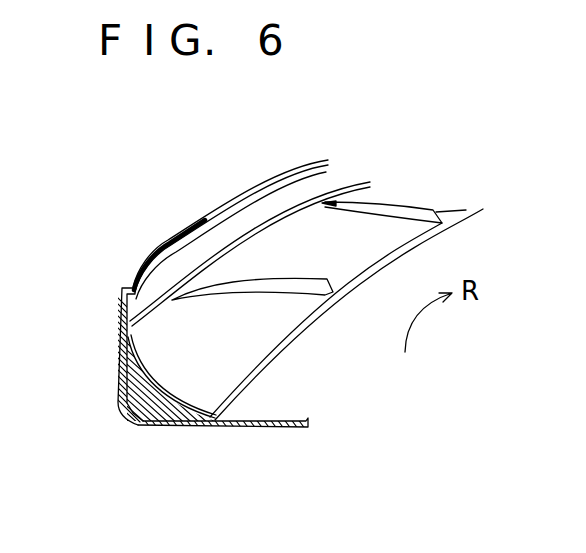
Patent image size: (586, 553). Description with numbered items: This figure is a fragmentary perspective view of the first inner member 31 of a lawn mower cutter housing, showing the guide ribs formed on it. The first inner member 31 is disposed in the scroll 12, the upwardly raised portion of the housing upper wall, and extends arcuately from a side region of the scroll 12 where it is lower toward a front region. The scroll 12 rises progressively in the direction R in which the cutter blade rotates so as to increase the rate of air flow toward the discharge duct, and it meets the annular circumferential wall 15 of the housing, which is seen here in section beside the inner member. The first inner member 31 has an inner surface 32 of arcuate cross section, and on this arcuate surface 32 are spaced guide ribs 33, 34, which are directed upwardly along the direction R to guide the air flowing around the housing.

The scroll 12 is at (272, 431).
The circumferential wall 15 is at (118, 335).
The first inner member 31 is at (310, 351).
The inner surface 32 is at (298, 234).
The guide rib 33 is at (261, 285).
The guide rib 34 is at (393, 205).